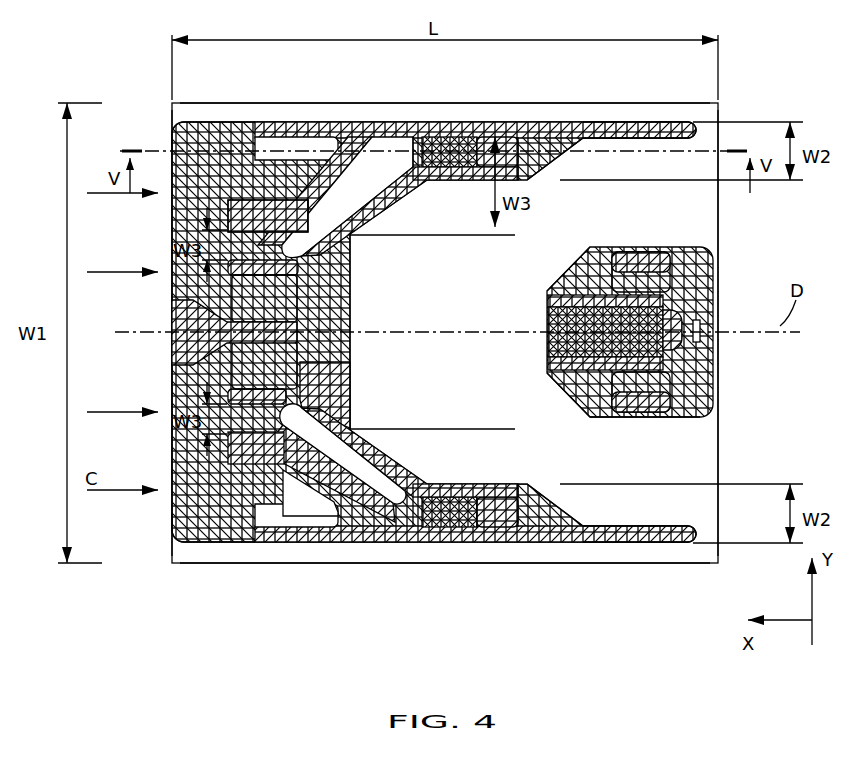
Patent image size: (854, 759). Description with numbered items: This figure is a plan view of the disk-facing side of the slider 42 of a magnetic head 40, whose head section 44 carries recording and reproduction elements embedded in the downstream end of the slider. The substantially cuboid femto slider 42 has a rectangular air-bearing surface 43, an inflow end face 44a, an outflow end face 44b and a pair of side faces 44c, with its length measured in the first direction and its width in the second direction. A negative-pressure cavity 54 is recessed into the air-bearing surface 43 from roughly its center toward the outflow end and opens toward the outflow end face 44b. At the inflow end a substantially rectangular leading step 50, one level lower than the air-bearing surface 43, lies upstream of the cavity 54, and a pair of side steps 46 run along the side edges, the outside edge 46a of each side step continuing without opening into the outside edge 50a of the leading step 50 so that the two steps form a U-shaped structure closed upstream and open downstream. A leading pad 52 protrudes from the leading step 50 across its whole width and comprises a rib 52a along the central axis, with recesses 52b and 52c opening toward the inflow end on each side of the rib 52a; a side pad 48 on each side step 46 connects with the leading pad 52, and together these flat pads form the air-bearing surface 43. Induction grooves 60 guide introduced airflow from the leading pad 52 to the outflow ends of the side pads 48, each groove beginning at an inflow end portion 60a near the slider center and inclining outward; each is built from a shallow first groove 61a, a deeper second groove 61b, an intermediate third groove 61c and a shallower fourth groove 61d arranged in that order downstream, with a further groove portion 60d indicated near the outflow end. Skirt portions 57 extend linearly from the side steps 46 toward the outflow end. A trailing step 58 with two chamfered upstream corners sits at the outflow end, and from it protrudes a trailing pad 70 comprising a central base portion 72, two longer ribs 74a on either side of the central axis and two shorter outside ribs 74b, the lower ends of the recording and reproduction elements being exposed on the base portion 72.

The magnetic head 40 is at (754, 420).
The slider 42 is at (388, 585).
The air-bearing surface 43 is at (367, 138).
The head section 44 is at (700, 334).
The inflow end face 44a is at (173, 500).
The outflow end face 44b is at (720, 222).
The side faces 44c is at (606, 122).
The side steps 46 is at (520, 180).
The outside edge of side step 46a is at (447, 152).
The side pad 48 is at (530, 142).
The leading step 50 is at (178, 217).
The outside edge of leading step 50a is at (290, 122).
The leading pad 52 is at (342, 307).
The rib 52a is at (240, 333).
The recess 52b is at (253, 303).
The recess 52c is at (250, 150).
The negative-pressure cavity 54 is at (437, 389).
The skirt portions 57 is at (652, 130).
The trailing step 58 is at (712, 272).
The induction grooves 60 is at (397, 178).
The inflow end portion of induction groove 60a is at (245, 240).
The lower insert 60d is at (508, 517).
The first groove 61a is at (273, 247).
The second groove 61b is at (357, 197).
The third groove 61c is at (450, 180).
The fourth groove 61d is at (482, 180).
The trailing pad 70 is at (682, 385).
The base portion 72 is at (712, 310).
The ribs 74a is at (556, 284).
The outside ribs 74b is at (633, 255).